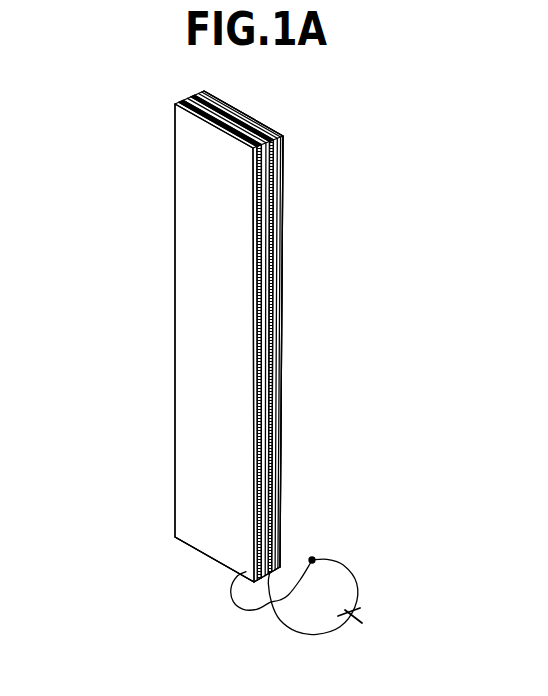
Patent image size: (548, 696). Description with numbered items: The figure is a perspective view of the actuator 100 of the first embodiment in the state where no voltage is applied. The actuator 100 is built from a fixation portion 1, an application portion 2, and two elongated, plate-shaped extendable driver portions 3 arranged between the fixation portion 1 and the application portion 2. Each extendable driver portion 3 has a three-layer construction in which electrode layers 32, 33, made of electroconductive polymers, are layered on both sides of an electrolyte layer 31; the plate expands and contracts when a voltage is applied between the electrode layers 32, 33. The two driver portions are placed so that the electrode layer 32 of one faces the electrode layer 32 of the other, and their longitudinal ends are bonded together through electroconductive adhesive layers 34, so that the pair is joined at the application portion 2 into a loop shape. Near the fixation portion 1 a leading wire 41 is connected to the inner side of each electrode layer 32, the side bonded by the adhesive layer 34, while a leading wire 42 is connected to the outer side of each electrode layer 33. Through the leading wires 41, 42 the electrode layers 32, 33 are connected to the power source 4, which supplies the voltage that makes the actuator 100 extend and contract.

The actuator 100 is at (135, 128).
The fixation portion 1 is at (285, 532).
The application portion 2 is at (288, 140).
The extendable driver portions 3 is at (168, 270).
The electrolyte layer 31 is at (257, 418).
The electrode layer 32 is at (263, 462).
The electrode layer 33 is at (255, 340).
The electroconductive adhesive layer 34 is at (267, 190).
The power source 4 is at (370, 607).
The leading wire 41 is at (291, 625).
The leading wire 42 is at (358, 588).